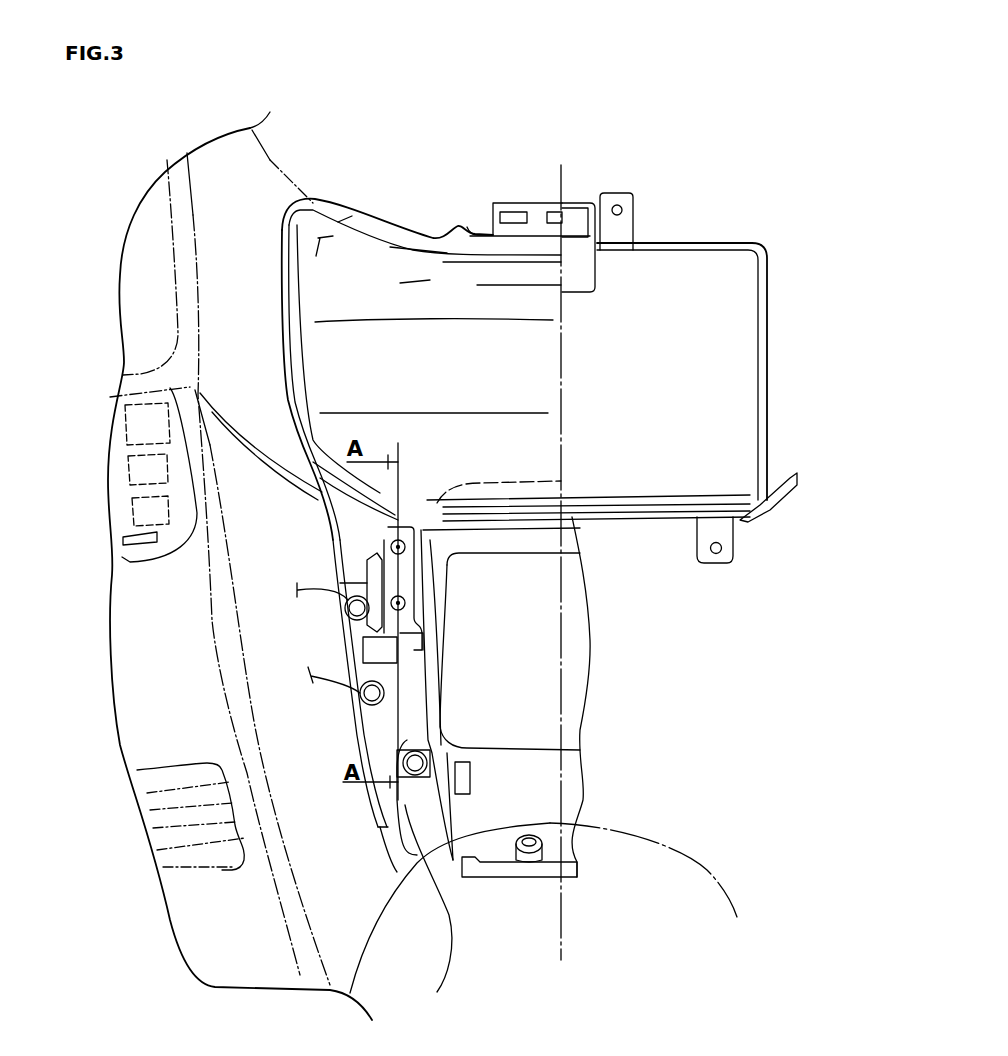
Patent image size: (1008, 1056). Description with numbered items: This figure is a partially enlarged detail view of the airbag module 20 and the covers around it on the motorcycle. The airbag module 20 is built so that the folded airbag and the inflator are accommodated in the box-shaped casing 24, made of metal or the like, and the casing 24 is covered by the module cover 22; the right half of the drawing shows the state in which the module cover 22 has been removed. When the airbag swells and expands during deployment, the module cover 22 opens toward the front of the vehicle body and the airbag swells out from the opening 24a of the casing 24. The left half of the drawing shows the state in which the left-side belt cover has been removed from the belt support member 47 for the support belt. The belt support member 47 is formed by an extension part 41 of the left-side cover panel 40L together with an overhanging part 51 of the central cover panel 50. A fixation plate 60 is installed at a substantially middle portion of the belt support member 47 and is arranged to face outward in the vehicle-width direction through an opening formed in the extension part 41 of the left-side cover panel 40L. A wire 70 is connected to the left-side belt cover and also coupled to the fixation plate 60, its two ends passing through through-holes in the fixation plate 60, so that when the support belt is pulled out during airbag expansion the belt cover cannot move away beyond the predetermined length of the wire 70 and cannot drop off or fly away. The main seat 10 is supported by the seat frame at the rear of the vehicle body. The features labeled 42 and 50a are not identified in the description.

The main seat 10 is at (705, 868).
The airbag module 20 is at (723, 193).
The module cover 22 is at (361, 268).
The casing 24 is at (770, 268).
The opening 24a is at (693, 388).
The left-side cover panel 40L is at (328, 883).
The extension part 41 is at (380, 527).
The clip 42 is at (375, 577).
The belt support member 47 is at (366, 797).
The central cover panel 50 is at (511, 877).
The opening 50a is at (515, 646).
The overhanging part 51 is at (416, 912).
The fixation plate 60 is at (345, 653).
The wire 70 is at (372, 693).